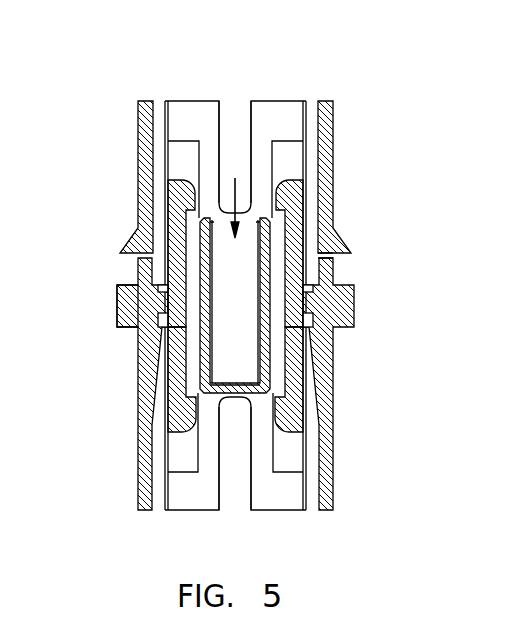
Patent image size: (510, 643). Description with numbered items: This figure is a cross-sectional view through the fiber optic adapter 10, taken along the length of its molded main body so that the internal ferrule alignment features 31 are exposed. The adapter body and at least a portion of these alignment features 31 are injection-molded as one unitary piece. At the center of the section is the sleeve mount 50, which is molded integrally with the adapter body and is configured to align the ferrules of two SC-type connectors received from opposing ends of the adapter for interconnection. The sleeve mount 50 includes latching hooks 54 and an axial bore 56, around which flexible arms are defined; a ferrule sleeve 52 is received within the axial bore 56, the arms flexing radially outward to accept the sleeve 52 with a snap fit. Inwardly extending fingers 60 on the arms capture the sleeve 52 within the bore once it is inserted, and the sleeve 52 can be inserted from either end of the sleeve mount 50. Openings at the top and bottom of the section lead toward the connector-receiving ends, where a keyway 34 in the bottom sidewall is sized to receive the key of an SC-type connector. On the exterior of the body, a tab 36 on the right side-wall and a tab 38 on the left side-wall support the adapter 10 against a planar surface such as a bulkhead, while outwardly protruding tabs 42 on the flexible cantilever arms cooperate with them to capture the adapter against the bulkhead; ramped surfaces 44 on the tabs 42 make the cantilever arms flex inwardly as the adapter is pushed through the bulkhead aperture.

The fiber optic adapter 10 is at (382, 389).
The internal ferrule alignment features 31 is at (186, 450).
The keyway 34 is at (242, 118).
The tab 36 is at (352, 313).
The tab 38 is at (123, 300).
The outwardly protruding tab 42 is at (343, 255).
The ramped surface 44 is at (345, 244).
The sleeve mount 50 is at (124, 384).
The ferrule sleeve 52 is at (248, 309).
The latching hook 54 is at (293, 198).
The axial bore 56 is at (234, 196).
The inwardly extending finger 60 is at (208, 385).